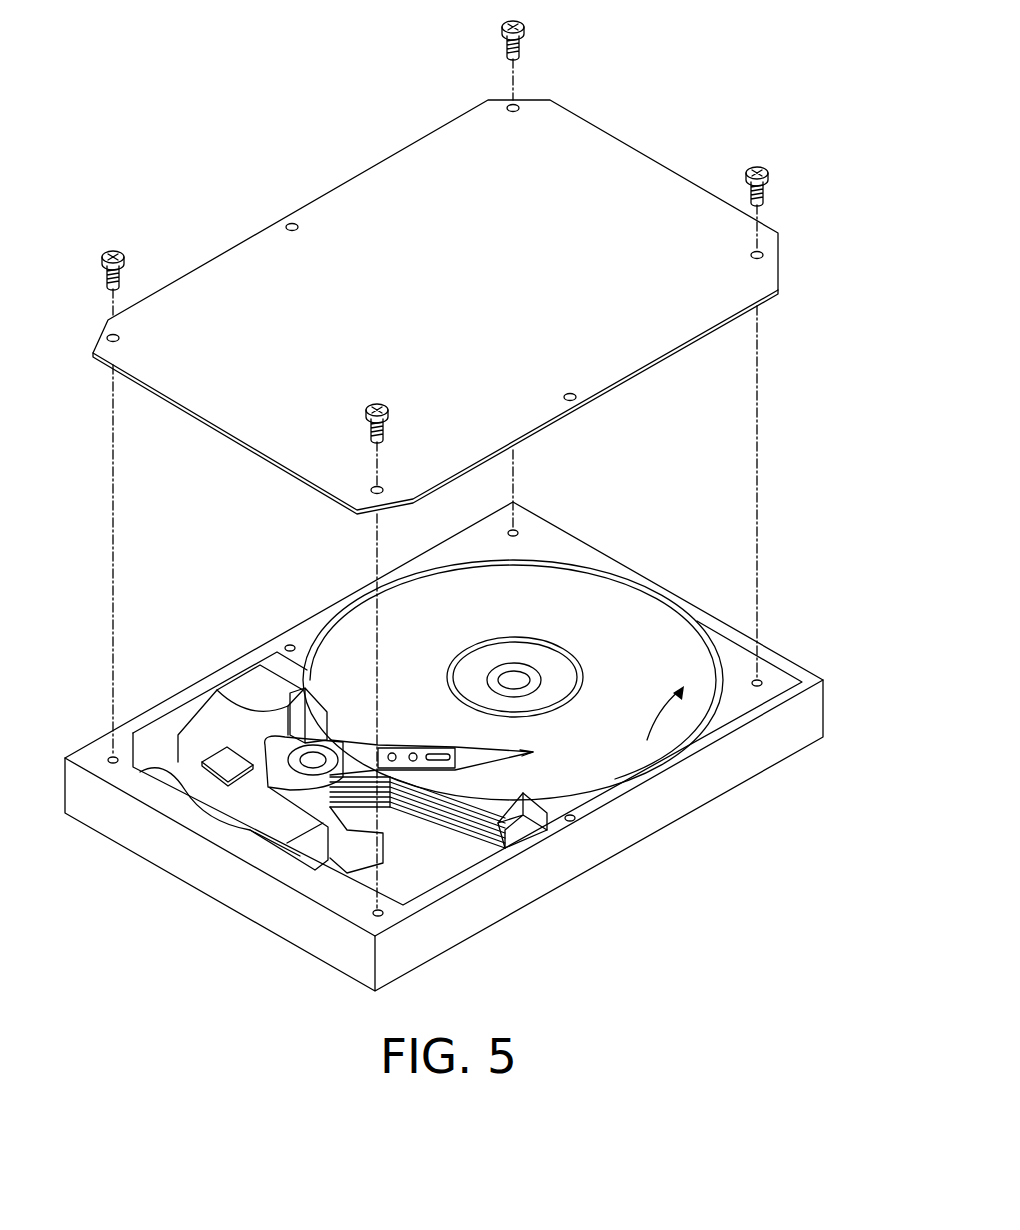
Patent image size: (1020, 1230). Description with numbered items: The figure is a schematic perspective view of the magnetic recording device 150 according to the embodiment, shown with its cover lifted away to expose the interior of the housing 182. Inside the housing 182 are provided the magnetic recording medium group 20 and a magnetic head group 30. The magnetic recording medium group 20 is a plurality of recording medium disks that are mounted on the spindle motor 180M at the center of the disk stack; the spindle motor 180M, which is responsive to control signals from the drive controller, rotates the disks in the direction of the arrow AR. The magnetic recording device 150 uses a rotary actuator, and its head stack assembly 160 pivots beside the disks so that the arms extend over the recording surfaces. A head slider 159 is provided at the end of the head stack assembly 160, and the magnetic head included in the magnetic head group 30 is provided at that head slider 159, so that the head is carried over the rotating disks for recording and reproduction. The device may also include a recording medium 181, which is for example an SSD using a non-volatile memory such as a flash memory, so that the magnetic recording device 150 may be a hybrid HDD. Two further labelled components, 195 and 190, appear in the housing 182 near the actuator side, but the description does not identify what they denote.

The magnetic recording device 150 is at (693, 106).
The magnetic recording medium group 20 is at (573, 597).
The spindle motor 180M is at (568, 652).
The housing 182 is at (793, 660).
The voice coil motor 195 is at (205, 735).
The head stack assembly 160 is at (405, 738).
The arrow AR is at (677, 717).
The magnetic head group 30 is at (547, 746).
The head slider 159 is at (530, 770).
The flexible printed circuit 190 is at (195, 755).
The recording medium 181 is at (217, 779).